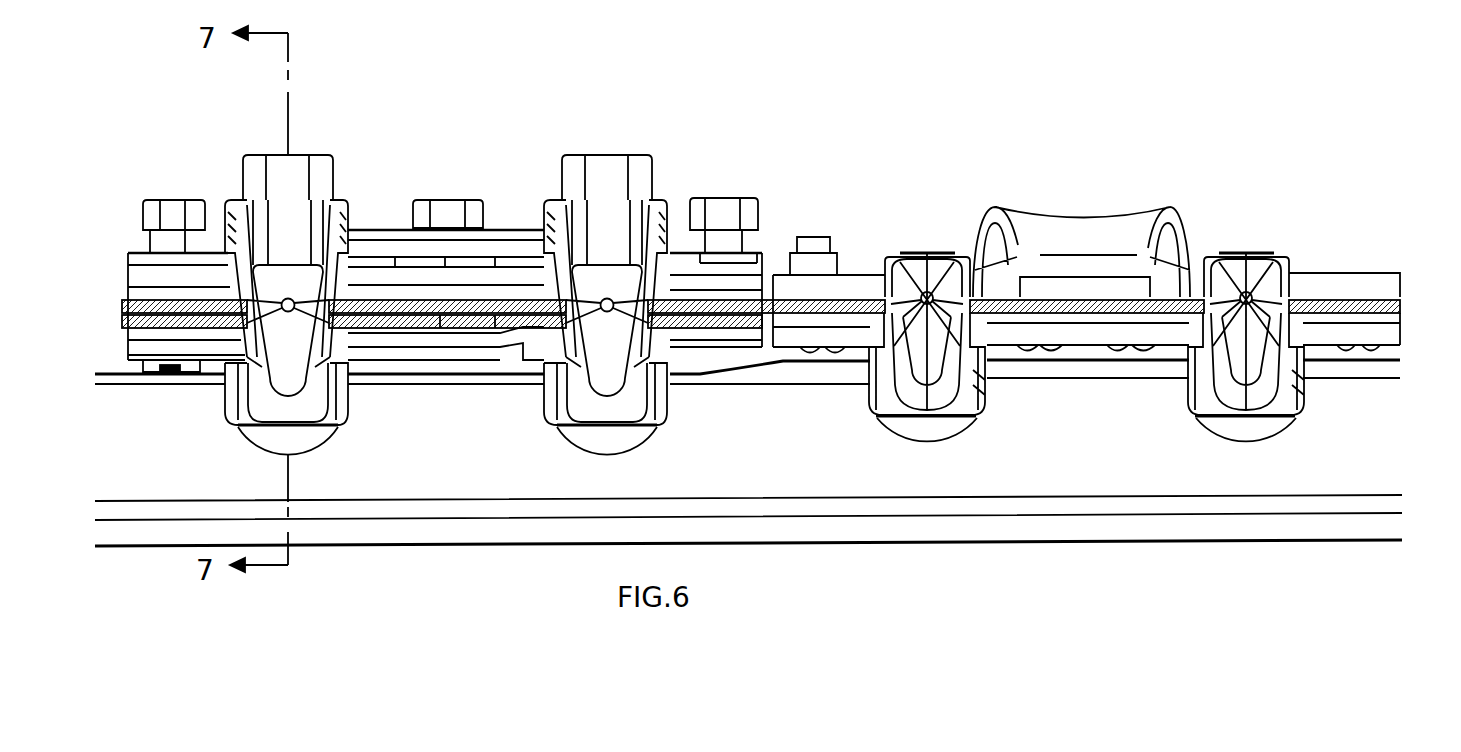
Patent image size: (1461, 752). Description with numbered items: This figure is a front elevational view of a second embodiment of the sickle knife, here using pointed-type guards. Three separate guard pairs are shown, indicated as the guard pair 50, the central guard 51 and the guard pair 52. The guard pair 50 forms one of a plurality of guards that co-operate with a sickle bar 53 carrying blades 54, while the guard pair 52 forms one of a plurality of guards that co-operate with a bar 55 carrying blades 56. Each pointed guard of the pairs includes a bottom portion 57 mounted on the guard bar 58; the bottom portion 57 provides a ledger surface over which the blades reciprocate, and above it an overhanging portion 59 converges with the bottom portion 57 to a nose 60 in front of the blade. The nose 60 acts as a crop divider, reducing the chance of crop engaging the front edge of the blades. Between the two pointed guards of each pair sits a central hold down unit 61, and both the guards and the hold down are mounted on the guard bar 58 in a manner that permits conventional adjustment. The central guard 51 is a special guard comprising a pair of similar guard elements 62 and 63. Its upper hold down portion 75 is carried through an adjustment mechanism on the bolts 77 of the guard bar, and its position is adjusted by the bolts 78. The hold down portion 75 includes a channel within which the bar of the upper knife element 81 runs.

The guard pair 50 is at (960, 279).
The central guard 51 is at (613, 254).
The guard pair 52 is at (1243, 278).
The sickle bar 53 is at (1108, 323).
The blades 54 is at (845, 297).
The bar 55 is at (1243, 301).
The blades 56 is at (1320, 296).
The bottom portion 57 is at (957, 369).
The guard bar 58 is at (817, 383).
The overhanging portion 59 is at (927, 244).
The nose 60 is at (918, 401).
The central hold down unit 61 is at (1085, 237).
The guard element 62 is at (319, 342).
The guard element 63 is at (586, 338).
The hold down portion 75 is at (328, 258).
The bolts 77 is at (641, 238).
The bolts 78 is at (470, 218).
The upper knife element 81 is at (203, 290).